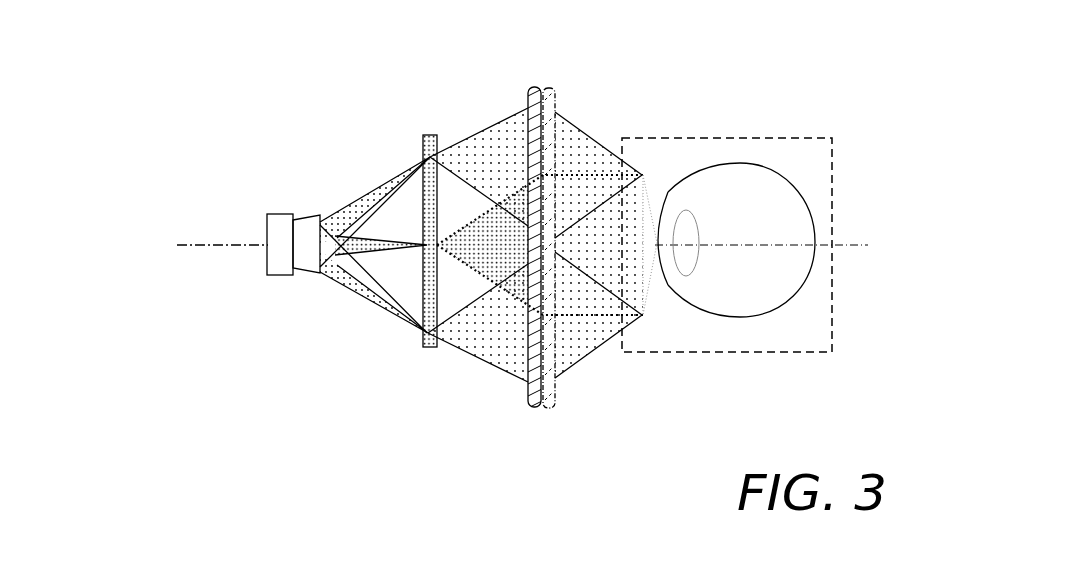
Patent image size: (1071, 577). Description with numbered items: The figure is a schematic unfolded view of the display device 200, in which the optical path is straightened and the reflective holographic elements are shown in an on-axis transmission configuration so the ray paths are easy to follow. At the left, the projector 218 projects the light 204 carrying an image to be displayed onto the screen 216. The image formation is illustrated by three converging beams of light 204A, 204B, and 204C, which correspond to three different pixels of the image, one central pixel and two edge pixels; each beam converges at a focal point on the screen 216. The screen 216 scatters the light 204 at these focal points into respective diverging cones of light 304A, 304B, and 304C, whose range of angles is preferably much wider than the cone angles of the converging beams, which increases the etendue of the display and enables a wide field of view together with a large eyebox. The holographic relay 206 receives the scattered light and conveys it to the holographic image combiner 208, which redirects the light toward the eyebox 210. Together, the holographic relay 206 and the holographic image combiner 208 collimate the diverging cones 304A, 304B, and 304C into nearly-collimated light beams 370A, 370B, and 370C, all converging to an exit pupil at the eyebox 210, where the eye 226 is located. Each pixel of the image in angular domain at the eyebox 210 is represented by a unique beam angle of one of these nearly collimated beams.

The display device 200 is at (326, 457).
The light 204 is at (388, 150).
The first converging beam of light 204A is at (326, 214).
The second converging beam of light 204B is at (377, 253).
The third converging beam of light 204C is at (328, 263).
The holographic relay 206 is at (529, 410).
The holographic image combiner 208 is at (549, 87).
The eyebox 210 is at (665, 137).
The screen 216 is at (429, 349).
The projector 218 is at (283, 213).
The eye 226 is at (777, 239).
The first diverging cone of light 304A is at (495, 139).
The second diverging cone of light 304B is at (540, 245).
The third diverging cone of light 304C is at (488, 357).
The first nearly-collimated light beam 370A is at (600, 154).
The second nearly-collimated light beam 370B is at (600, 320).
The third nearly-collimated light beam 370C is at (563, 375).